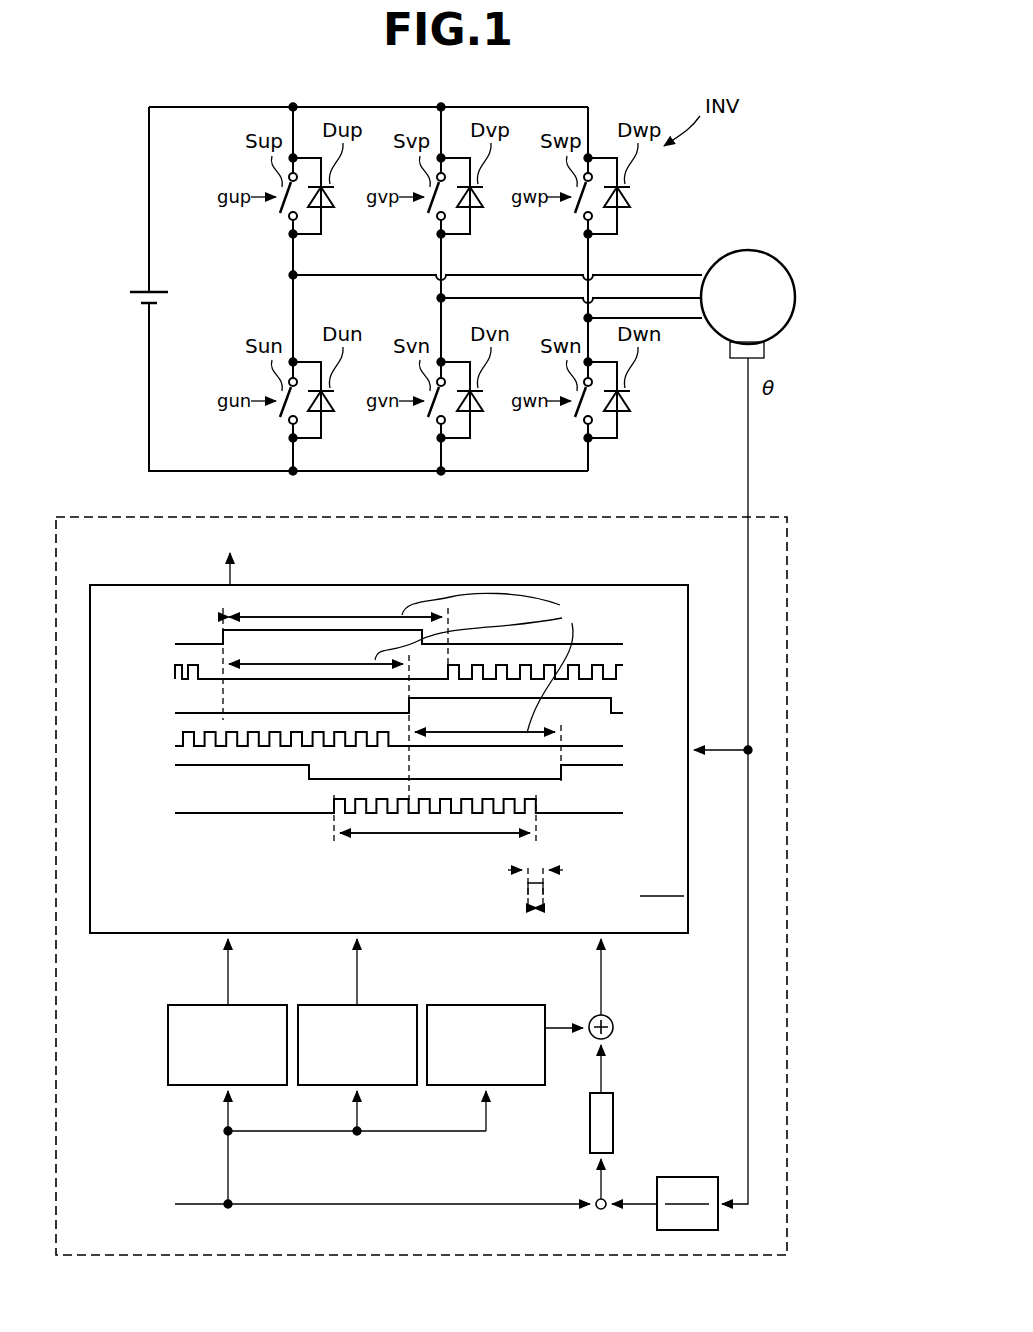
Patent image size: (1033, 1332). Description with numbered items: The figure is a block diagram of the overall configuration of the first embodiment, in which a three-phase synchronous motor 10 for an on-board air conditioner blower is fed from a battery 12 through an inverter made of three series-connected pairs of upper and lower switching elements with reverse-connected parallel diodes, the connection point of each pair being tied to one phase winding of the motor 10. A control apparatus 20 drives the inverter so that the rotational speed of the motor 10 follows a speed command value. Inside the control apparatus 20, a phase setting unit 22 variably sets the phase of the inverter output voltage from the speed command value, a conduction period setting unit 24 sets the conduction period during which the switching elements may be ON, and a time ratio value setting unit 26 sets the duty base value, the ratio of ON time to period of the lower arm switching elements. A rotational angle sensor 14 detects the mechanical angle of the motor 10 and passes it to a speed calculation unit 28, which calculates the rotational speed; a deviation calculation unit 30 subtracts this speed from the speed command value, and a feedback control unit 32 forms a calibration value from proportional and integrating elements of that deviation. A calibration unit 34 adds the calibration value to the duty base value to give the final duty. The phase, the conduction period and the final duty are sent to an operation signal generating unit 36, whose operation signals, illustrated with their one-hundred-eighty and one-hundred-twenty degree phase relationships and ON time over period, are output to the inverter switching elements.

The motor 10 is at (748, 251).
The battery 12 is at (162, 291).
The rotational angle sensor 14 is at (764, 350).
The control apparatus 20 is at (682, 515).
The phase setting unit 22 is at (190, 1003).
The conduction period setting unit 24 is at (326, 1003).
The time ratio value setting unit 26 is at (465, 1003).
The speed calculation unit 28 is at (693, 1176).
The deviation calculation unit 30 is at (598, 1210).
The feedback control unit 32 is at (614, 1115).
The calibration unit 34 is at (613, 1018).
The operation signal generating unit 36 is at (688, 848).